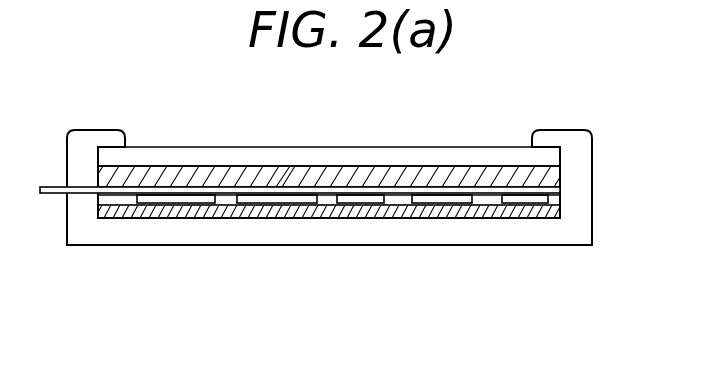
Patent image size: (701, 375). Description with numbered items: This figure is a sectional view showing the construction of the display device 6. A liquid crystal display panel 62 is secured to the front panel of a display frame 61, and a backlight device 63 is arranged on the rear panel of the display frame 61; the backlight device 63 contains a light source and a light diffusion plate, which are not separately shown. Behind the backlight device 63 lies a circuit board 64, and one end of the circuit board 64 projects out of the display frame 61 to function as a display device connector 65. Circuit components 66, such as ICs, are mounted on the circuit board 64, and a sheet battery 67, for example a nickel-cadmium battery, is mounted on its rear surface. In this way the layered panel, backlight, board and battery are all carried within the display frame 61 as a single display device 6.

The display device 6 is at (303, 194).
The display frame 61 is at (573, 145).
The liquid crystal display panel 62 is at (426, 153).
The backlight device 63 is at (360, 170).
The circuit board 64 is at (283, 180).
The display device connector 65 is at (42, 195).
The circuit components 66 is at (137, 200).
The sheet battery 67 is at (247, 215).